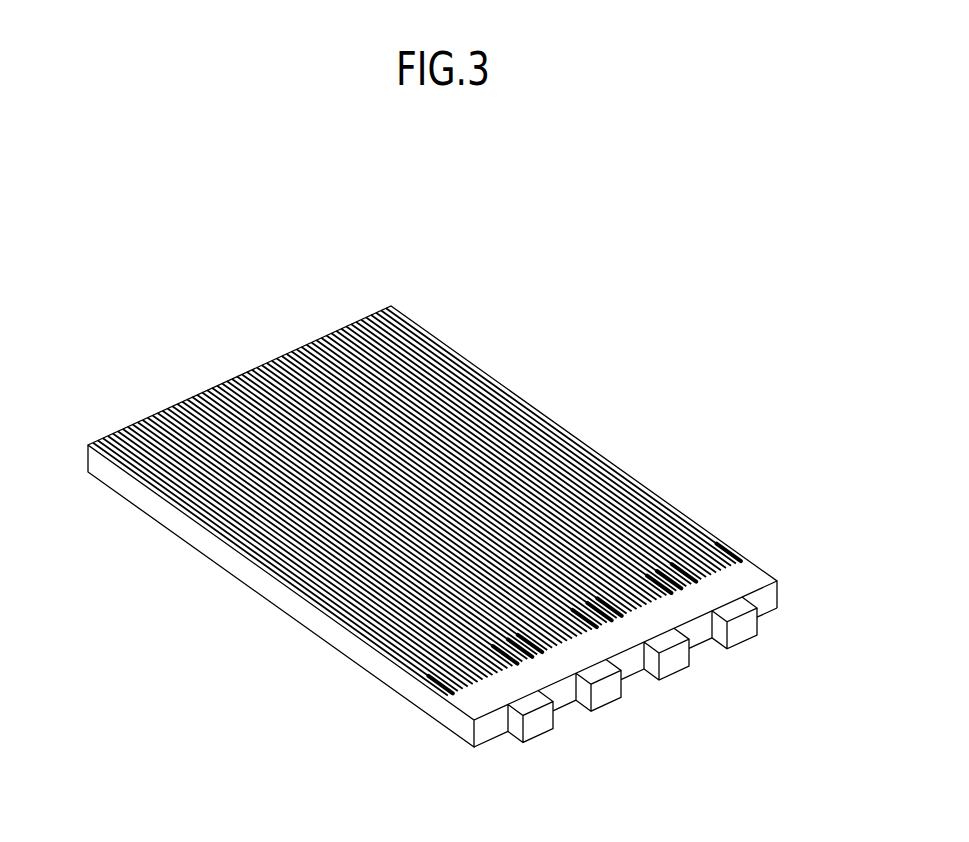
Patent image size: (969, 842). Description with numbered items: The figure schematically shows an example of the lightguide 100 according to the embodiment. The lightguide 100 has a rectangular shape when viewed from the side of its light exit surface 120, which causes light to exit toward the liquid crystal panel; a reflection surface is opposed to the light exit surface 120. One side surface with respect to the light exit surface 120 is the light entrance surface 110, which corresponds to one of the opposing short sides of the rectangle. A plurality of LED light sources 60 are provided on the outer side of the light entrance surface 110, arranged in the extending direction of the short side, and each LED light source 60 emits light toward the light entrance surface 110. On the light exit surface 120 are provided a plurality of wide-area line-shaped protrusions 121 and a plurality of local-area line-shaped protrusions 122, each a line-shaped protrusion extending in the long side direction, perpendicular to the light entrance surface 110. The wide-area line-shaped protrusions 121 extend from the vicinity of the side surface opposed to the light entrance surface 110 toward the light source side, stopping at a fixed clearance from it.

The lightguide 100 is at (451, 174).
The light entrance surface 110 is at (620, 655).
The light exit surface 120 is at (444, 318).
The wide-area line-shaped protrusions 121 is at (320, 358).
The local-area line-shaped protrusions 122 is at (652, 562).
The LED light sources 60 is at (770, 672).